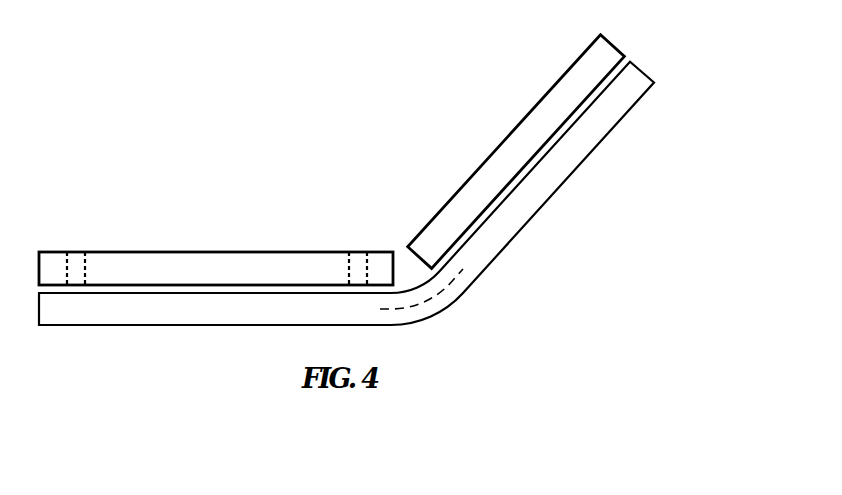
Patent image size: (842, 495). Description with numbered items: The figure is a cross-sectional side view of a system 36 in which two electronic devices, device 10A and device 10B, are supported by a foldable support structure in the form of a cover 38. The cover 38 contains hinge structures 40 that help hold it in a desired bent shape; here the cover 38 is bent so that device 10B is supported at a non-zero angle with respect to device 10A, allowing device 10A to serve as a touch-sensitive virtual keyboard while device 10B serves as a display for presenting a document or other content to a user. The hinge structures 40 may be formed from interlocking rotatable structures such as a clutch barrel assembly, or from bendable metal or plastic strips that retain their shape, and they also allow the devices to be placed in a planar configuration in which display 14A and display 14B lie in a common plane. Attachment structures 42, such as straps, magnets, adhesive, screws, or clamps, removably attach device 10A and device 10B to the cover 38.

The system 36 is at (305, 129).
The device 10A is at (200, 236).
The device 10B is at (464, 158).
The display 14A is at (135, 251).
The display 14B is at (525, 117).
The cover 38 is at (515, 236).
The hinge structures 40 is at (440, 291).
The attachment structures 42 is at (85, 268).